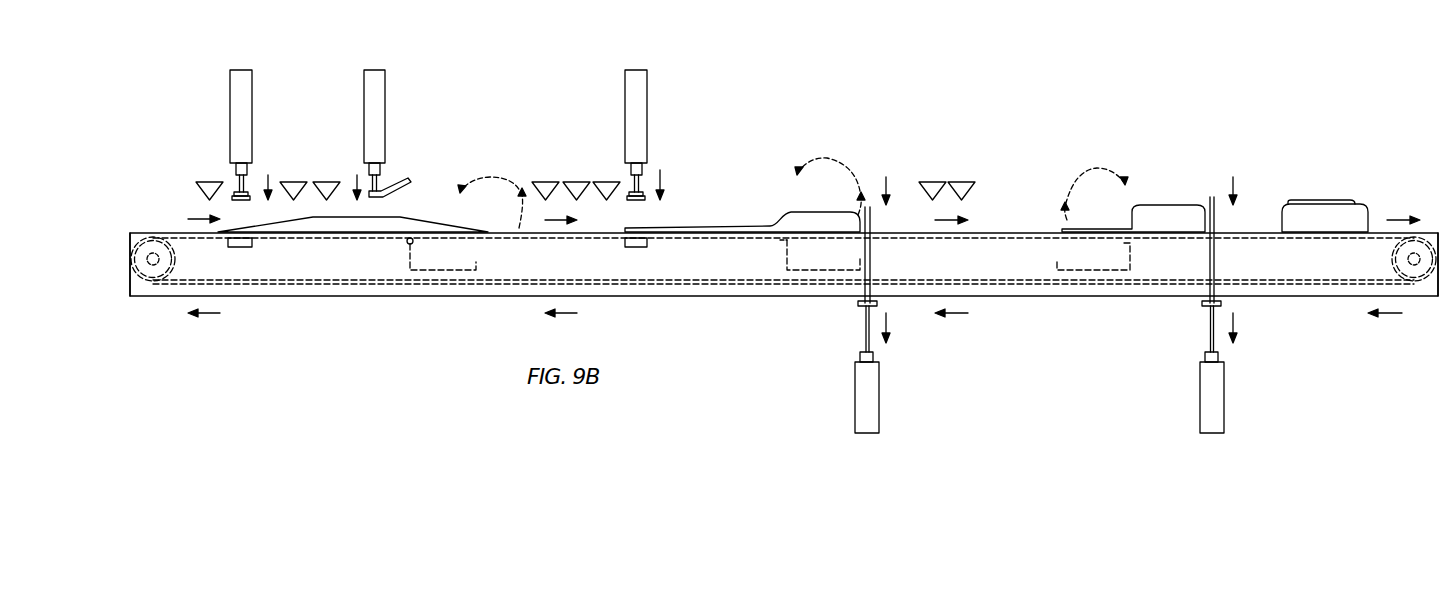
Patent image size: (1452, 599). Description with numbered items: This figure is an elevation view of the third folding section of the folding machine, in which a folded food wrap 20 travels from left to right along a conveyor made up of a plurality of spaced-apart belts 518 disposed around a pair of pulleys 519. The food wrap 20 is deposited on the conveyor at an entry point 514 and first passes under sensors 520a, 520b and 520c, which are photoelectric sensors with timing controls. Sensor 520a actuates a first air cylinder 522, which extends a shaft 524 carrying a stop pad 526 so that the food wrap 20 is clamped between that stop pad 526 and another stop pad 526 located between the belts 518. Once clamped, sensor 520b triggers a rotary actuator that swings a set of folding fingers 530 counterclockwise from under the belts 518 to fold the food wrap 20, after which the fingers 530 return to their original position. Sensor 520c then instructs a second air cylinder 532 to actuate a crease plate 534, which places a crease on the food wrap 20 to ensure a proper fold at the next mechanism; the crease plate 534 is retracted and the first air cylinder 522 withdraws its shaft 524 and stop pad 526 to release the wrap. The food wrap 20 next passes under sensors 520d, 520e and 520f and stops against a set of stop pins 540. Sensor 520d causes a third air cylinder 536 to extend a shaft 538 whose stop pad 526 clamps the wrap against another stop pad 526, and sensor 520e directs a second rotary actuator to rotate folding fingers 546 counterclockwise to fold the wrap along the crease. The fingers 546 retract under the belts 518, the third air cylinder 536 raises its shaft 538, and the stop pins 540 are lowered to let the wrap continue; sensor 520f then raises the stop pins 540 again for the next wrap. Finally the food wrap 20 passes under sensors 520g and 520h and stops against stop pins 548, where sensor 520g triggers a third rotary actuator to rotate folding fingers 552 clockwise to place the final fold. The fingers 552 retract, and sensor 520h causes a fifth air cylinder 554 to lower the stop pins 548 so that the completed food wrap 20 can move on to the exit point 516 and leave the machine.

The food wrap 20 is at (1322, 203).
The entry point 514 is at (131, 148).
The exit point 516 is at (1435, 148).
The belts 518 is at (327, 283).
The pulleys 519 is at (153, 265).
The sensor 520a is at (210, 182).
The sensor 520b is at (293, 182).
The sensor 520c is at (327, 182).
The sensor 520d is at (545, 182).
The sensor 520e is at (577, 182).
The sensor 520f is at (607, 182).
The sensor 520g is at (932, 182).
The sensor 520h is at (982, 162).
The first air cylinder 522 is at (240, 70).
The shaft 524 is at (238, 188).
The stop pad 526 is at (243, 201).
The folding fingers 530 is at (448, 275).
The second air cylinder 532 is at (374, 70).
The crease plate 534 is at (395, 183).
The third air cylinder 536 is at (633, 70).
The shaft 538 is at (644, 185).
The stop pins 540 is at (870, 210).
The folding fingers 546 is at (800, 272).
The stop pins 548 is at (879, 383).
The folding fingers 552 is at (1088, 272).
The fifth air cylinder 554 is at (1224, 383).